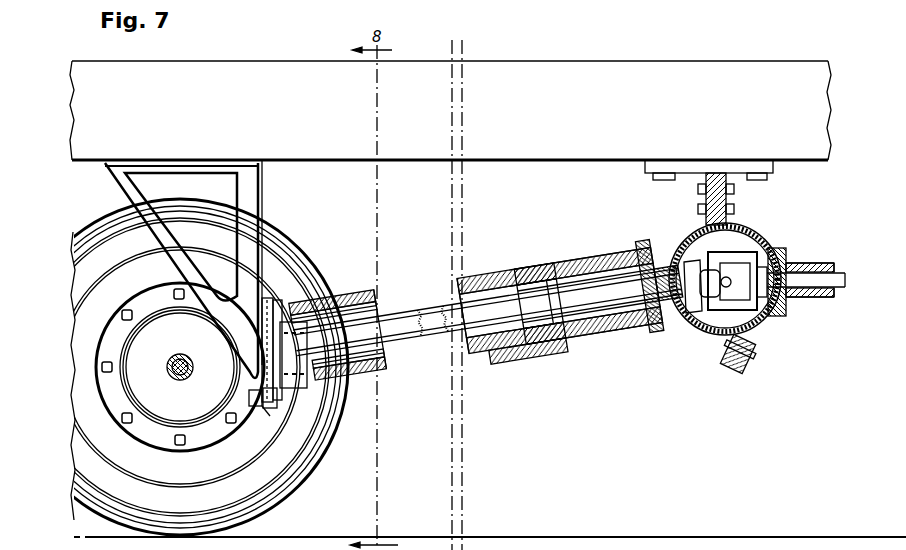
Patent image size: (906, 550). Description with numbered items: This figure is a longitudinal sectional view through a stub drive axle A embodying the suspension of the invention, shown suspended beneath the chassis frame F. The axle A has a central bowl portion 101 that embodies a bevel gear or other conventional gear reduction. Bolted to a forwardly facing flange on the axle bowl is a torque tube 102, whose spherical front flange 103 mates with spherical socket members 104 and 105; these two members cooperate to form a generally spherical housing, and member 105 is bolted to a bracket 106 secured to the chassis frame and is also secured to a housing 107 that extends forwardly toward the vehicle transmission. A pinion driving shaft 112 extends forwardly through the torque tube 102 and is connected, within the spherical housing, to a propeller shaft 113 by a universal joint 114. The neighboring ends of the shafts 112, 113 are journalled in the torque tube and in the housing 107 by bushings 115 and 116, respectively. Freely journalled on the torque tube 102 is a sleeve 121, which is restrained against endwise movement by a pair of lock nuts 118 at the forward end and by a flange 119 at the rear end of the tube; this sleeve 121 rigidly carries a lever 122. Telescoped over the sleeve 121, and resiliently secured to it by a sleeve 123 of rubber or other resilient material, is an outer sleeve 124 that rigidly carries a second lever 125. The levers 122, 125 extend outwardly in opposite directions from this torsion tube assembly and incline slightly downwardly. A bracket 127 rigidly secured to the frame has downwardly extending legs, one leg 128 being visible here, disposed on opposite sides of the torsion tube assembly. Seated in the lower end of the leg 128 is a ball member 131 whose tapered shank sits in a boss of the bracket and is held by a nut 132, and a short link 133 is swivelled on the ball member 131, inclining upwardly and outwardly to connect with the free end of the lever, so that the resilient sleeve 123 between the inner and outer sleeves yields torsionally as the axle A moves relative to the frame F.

The central bowl portion 101 is at (194, 340).
The torque tube 102 is at (518, 300).
The spherical front flange 103 is at (684, 317).
The spherical socket member 104 is at (727, 335).
The spherical socket member 105 is at (760, 333).
The bracket 106 is at (712, 162).
The housing 107 is at (820, 298).
The pinion driving shaft 112 is at (356, 330).
The propeller shaft 113 is at (787, 280).
The universal joint 114 is at (722, 312).
The bushing 115 is at (638, 265).
The bushing 116 is at (800, 284).
The lock nuts 118 is at (662, 266).
The flange 119 is at (280, 298).
The sleeve 121 is at (326, 302).
The lever 122 is at (292, 398).
The resilient sleeve 123 is at (560, 276).
The outer sleeve 124 is at (546, 300).
The lever 125 is at (310, 292).
The bracket 127 is at (212, 160).
The leg 128 is at (166, 262).
The ball member 131 is at (262, 412).
The nut 132 is at (247, 396).
The short link 133 is at (258, 350).
The axle A is at (170, 373).
The chassis frame F is at (531, 76).